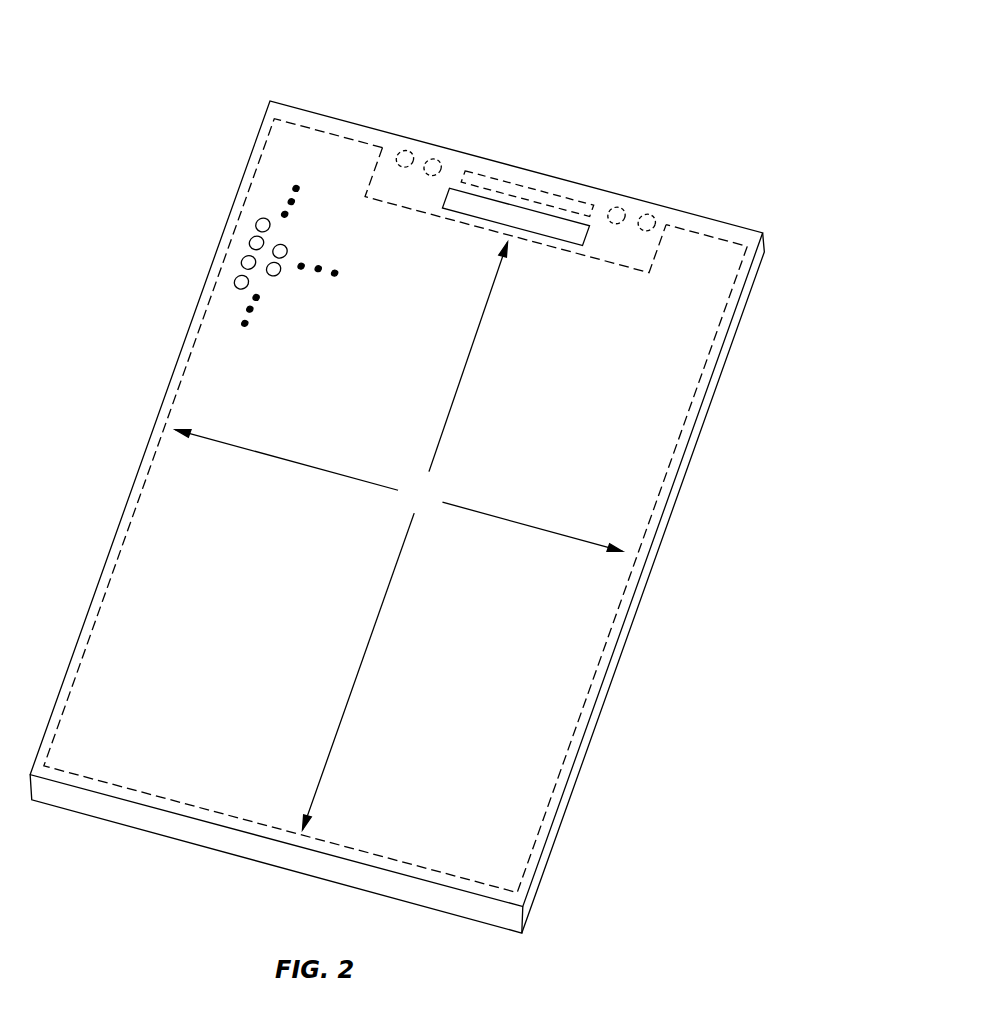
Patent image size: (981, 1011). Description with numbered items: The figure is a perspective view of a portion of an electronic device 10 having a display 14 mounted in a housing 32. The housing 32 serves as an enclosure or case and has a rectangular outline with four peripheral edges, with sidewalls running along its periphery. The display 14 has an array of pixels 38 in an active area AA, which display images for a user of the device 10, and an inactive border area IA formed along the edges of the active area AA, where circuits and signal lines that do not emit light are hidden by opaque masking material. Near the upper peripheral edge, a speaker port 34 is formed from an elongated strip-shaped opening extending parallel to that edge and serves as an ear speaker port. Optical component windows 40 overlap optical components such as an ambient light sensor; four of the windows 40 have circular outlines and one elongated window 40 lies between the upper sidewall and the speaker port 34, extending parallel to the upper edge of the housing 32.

The electronic device 10 is at (690, 76).
The display 14 is at (667, 377).
The housing 32 is at (748, 305).
The speaker port 34 is at (553, 229).
The pixels 38 is at (287, 248).
The optical component windows 40 is at (410, 150).
The inactive border area IA is at (605, 200).
The active area AA is at (384, 530).